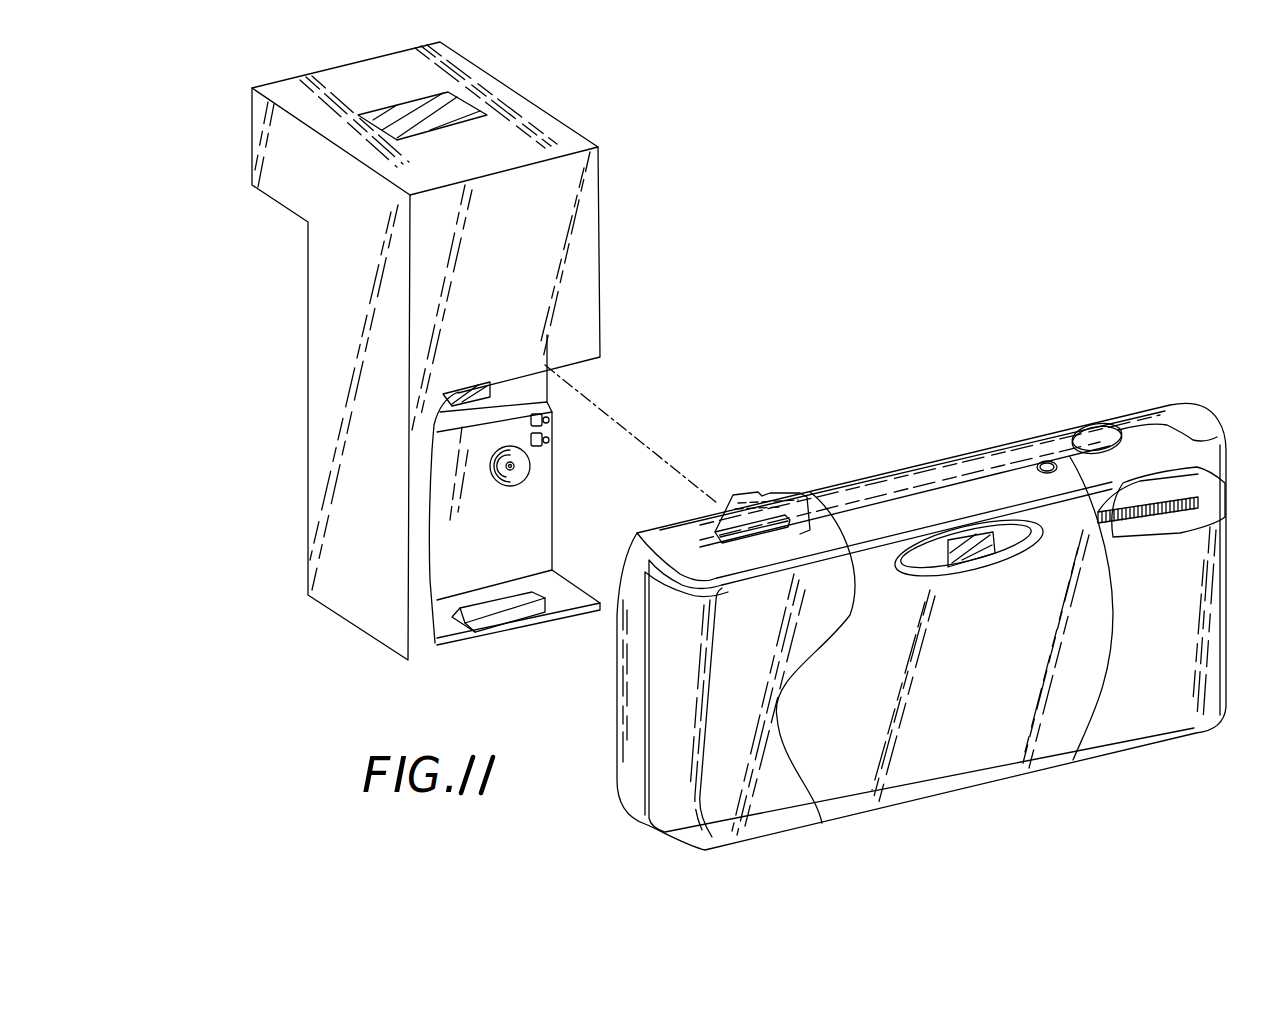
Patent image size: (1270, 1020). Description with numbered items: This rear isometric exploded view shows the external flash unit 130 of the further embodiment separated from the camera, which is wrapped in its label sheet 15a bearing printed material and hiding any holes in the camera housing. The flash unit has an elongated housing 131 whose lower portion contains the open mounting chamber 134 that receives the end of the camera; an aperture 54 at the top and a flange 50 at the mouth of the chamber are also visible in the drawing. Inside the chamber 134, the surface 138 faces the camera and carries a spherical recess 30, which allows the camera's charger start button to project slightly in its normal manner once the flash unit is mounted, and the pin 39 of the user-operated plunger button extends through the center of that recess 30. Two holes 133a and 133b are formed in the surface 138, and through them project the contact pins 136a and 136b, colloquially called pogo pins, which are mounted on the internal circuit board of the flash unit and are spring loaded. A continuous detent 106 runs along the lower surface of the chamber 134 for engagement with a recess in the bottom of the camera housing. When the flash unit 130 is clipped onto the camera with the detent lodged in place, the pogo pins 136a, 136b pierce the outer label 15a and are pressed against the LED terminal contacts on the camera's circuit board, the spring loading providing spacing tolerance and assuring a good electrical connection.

The external flash unit 130 is at (620, 175).
The cradle housing side wall 131 is at (600, 246).
The chamber 134 is at (582, 364).
The top aperture 54 is at (460, 107).
The guide flange 50 is at (480, 387).
The surface of chamber 138 is at (494, 581).
The pin 39 is at (515, 468).
The spherical recess 30 is at (517, 467).
The hole 133a is at (547, 418).
The contact pin 136a is at (538, 438).
The hole 133b is at (538, 448).
The contact pin 136b is at (549, 447).
The continuous detent 106 is at (518, 615).
The label sheet 15a is at (800, 787).